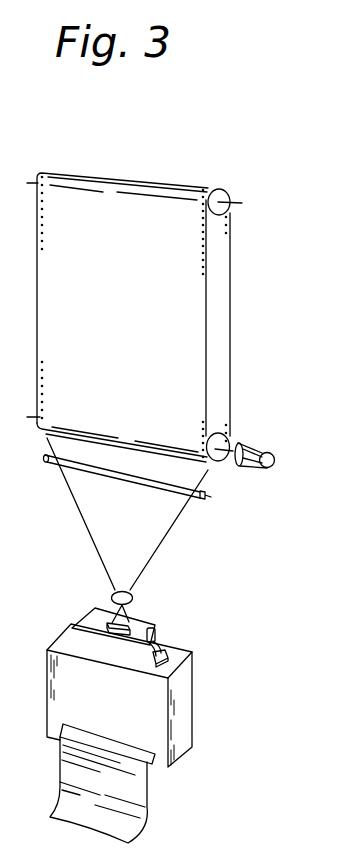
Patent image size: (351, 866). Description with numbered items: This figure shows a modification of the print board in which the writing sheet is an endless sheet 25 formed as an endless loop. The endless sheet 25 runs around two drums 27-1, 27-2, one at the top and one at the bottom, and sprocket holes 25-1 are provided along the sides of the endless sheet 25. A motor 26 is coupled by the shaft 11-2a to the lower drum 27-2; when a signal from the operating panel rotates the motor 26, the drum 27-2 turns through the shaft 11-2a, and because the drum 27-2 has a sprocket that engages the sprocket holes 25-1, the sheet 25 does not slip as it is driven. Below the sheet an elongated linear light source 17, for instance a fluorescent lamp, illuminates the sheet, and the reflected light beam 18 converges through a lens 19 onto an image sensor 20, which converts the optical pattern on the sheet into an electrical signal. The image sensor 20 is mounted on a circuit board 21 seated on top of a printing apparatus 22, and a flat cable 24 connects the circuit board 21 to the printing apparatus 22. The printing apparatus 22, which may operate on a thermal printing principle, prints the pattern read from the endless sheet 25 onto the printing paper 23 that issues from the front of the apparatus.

The endless sheet 25 is at (204, 313).
The sprocket hole 25-1 is at (204, 272).
The drum 27-1 is at (218, 191).
The drum 27-2 is at (220, 461).
The shaft 11-2a is at (236, 442).
The motor 26 is at (275, 458).
The elongated linear light source 17 is at (72, 470).
The light beam 18 is at (172, 518).
The lens 19 is at (134, 598).
The circuit board 21 is at (93, 614).
The image sensor 20 is at (77, 632).
The flat cable 24 is at (160, 638).
The printing apparatus 22 is at (187, 693).
The printing paper 23 is at (150, 803).